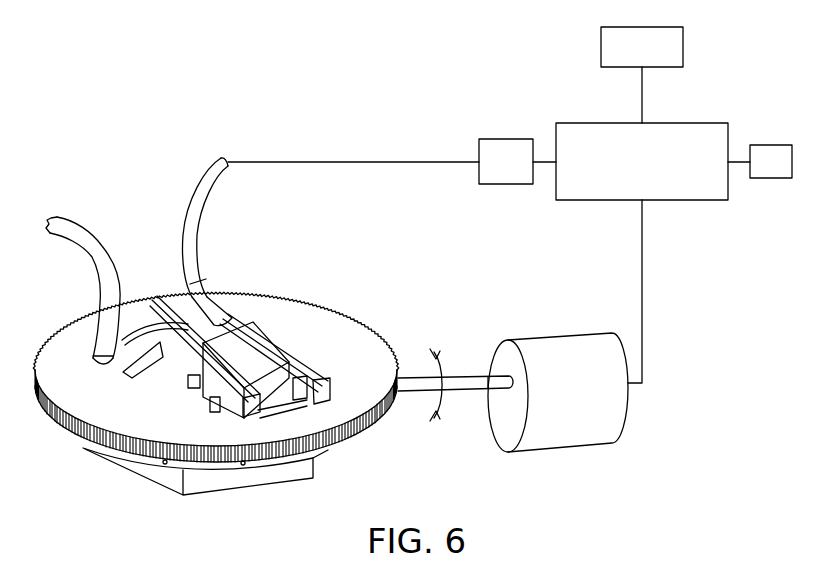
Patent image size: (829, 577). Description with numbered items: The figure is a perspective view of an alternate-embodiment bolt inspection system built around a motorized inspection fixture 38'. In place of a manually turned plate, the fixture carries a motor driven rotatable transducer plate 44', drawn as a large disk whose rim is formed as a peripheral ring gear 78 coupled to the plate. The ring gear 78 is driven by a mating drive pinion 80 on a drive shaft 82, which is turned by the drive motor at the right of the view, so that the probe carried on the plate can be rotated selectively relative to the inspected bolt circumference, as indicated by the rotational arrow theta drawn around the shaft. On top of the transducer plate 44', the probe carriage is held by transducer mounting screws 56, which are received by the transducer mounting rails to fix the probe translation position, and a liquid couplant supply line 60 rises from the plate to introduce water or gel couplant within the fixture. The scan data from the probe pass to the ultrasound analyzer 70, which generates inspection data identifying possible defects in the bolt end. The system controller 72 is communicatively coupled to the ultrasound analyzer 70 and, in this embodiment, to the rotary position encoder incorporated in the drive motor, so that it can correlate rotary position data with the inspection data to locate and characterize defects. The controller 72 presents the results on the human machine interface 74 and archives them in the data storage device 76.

The motorized inspection fixture 38' is at (215, 355).
The motor driven rotatable transducer plate 44' is at (215, 349).
The transducer mounting screws 56 is at (290, 357).
The liquid couplant supply line 60 is at (92, 230).
The ultrasound analyzer 70 is at (508, 177).
The system controller 72 is at (610, 188).
The human machine interface 74 is at (603, 48).
The data storage device 76 is at (763, 172).
The peripheral ring gear 78 is at (84, 449).
The drive pinion 80 is at (398, 372).
The drive shaft 82 is at (480, 387).